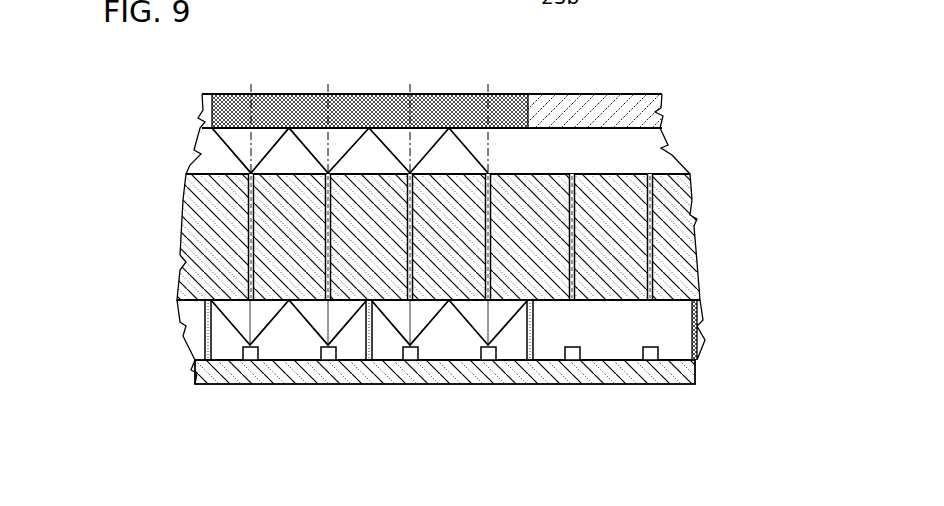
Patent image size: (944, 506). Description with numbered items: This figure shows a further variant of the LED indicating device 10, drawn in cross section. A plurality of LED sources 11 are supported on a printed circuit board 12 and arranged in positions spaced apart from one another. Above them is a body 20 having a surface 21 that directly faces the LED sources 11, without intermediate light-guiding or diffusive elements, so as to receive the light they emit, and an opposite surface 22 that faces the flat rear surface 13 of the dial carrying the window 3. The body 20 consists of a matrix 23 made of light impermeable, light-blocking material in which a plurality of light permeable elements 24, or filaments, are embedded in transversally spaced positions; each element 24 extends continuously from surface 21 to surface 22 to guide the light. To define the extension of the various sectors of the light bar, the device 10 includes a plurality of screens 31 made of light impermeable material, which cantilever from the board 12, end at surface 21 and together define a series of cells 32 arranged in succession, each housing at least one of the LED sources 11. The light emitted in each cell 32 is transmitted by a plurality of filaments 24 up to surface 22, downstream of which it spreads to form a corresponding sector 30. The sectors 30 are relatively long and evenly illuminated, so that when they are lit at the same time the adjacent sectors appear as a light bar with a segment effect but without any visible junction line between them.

The LED indicating device 10 is at (765, 106).
The window 3 is at (604, 108).
The sector 30 is at (260, 108).
The flat rear surface of dial 13 is at (659, 129).
The surface 22 is at (627, 173).
The body 20 is at (716, 275).
The matrix 23 is at (678, 200).
The light permeable element 24 is at (492, 200).
The surface 21 is at (675, 303).
The printed circuit board 12 is at (692, 371).
The LED source 11 is at (249, 356).
The screen 31 is at (197, 318).
The cell 32 is at (288, 329).